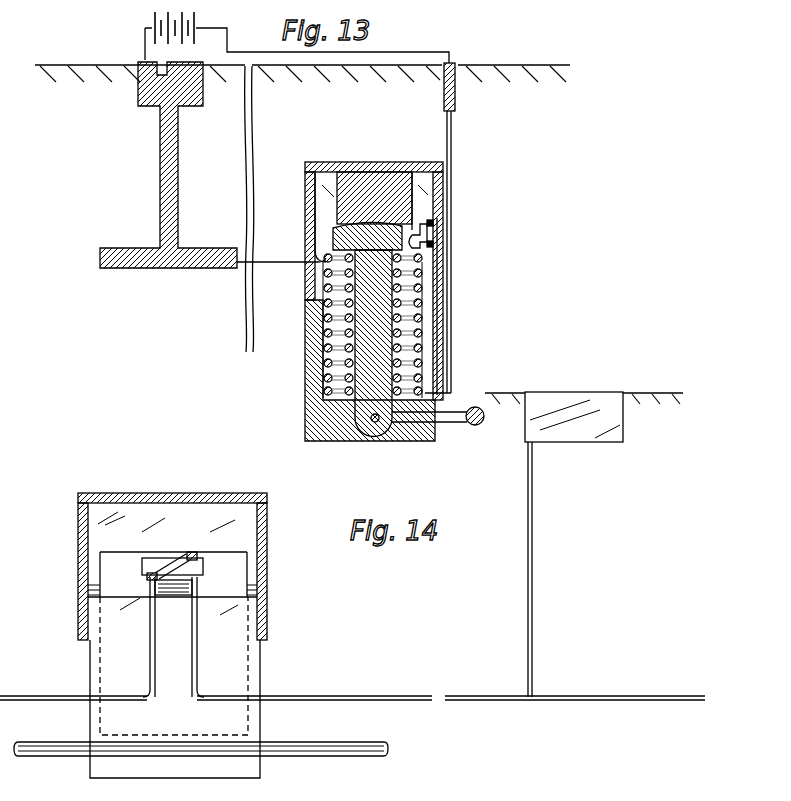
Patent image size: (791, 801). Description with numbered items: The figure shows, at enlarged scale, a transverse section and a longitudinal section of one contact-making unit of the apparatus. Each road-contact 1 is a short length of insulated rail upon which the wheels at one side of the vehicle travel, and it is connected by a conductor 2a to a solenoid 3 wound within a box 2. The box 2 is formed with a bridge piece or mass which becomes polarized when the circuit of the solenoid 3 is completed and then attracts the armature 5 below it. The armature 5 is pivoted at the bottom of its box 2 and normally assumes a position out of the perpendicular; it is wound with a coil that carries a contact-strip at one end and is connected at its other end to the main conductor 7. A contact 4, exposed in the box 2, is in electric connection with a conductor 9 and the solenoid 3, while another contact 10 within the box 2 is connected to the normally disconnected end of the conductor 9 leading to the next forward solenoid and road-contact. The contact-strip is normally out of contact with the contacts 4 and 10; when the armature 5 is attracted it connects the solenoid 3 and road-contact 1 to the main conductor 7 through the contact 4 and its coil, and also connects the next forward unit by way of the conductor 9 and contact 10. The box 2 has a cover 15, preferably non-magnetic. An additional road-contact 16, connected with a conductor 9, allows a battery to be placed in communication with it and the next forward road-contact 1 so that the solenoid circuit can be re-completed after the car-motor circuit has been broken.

In FIG. 13, the road-contact 1 is at (160, 141).
In FIG. 13, the box 2 is at (373, 343).
In FIG. 14, the box 2 is at (173, 637).
In FIG. 13, the actuating rod 2a is at (300, 262).
In FIG. 13, the solenoid 3 is at (322, 318).
In FIG. 13, the contact 4 is at (434, 223).
In FIG. 14, the contact 4 is at (196, 554).
In FIG. 13, the armature 5 is at (367, 236).
In FIG. 13, the main conductor 7 is at (471, 427).
In FIG. 14, the main conductor 7 is at (342, 746).
In FIG. 13, the conductor 9 is at (449, 276).
In FIG. 14, the conductor 9 is at (142, 638).
In FIG. 13, the contact 10 is at (434, 244).
In FIG. 14, the contact 10 is at (147, 578).
In FIG. 13, the cover 15 is at (315, 187).
In FIG. 14, the cover 15 is at (80, 517).
In FIG. 13, the additional road-contact 16 is at (452, 63).
In FIG. 14, the additional road-contact 16 is at (575, 393).